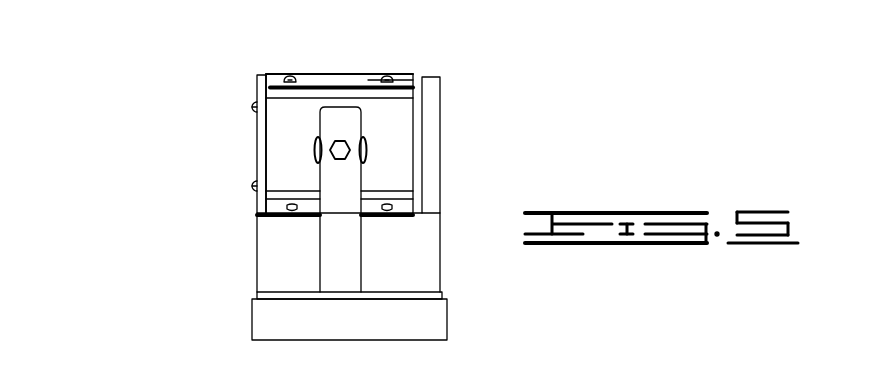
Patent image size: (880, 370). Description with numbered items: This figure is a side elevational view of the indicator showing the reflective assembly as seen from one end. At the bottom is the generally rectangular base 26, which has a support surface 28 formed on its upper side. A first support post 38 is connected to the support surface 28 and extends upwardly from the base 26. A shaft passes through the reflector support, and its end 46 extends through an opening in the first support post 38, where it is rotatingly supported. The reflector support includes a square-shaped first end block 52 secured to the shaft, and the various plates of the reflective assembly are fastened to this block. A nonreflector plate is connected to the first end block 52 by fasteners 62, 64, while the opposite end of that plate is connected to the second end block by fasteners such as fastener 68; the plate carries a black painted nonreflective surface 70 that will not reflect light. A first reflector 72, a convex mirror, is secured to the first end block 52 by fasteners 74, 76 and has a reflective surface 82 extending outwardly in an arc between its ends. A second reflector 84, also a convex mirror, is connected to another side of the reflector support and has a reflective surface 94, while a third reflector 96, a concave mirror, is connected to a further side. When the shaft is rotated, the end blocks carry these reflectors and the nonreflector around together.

The base 26 is at (437, 322).
The support surface 28 is at (423, 297).
The first support post 38 is at (352, 243).
The end of the shaft 46 is at (343, 152).
The first end block 52 is at (405, 108).
The fastener 62 is at (252, 105).
The fastener 64 is at (252, 183).
The fastener 68 is at (257, 127).
The nonreflective surface 70 is at (257, 153).
The first reflector 72 is at (337, 72).
The fastener 74 is at (297, 77).
The fastener 76 is at (387, 75).
The reflective surface 82 is at (312, 72).
The second reflector 84 is at (302, 218).
The reflective surface 94 is at (278, 217).
The third reflector 96 is at (420, 162).